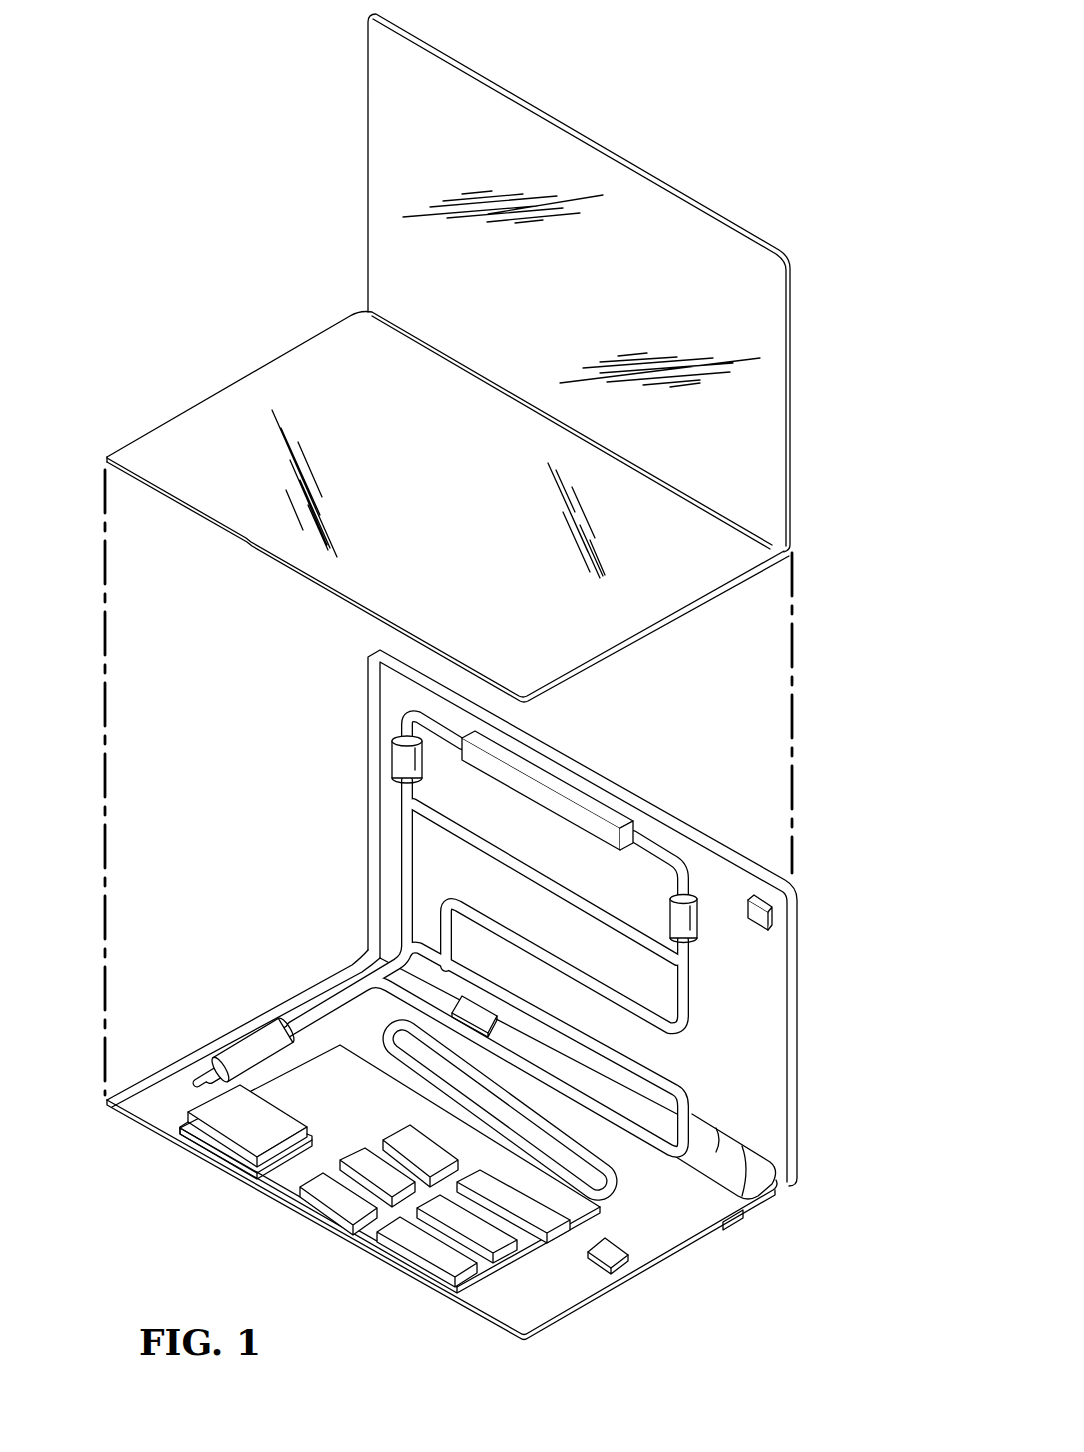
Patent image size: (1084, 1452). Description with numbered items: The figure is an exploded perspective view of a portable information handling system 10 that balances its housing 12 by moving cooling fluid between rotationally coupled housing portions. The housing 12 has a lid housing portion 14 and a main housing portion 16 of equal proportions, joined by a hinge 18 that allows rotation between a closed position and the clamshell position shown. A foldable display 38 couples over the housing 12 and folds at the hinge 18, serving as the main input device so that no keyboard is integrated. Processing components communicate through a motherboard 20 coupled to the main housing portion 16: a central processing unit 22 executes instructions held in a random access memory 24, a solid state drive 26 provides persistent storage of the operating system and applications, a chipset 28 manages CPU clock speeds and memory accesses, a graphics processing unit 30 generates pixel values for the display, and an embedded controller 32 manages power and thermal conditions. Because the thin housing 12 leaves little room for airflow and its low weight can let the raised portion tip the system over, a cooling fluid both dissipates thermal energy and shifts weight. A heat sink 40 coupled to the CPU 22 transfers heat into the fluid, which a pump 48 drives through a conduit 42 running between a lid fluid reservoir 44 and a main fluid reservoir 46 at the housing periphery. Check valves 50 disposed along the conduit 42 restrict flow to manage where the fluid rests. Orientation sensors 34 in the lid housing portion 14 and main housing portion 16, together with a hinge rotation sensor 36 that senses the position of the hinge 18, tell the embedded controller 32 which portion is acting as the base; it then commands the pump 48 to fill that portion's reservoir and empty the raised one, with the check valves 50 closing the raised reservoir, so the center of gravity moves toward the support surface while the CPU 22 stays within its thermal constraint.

The portable information handling system 10 is at (236, 193).
The housing 12 is at (456, 1311).
The lid housing portion 14 is at (368, 858).
The main housing portion 16 is at (758, 1206).
The hinge 18 is at (712, 1145).
The motherboard 20 is at (285, 1168).
The central processing unit (CPU) 22 is at (403, 1142).
The random access memory (RAM) 24 is at (398, 1185).
The solid state drive (SSD) 26 is at (293, 1172).
The chipset 28 is at (548, 1225).
The graphics processing unit (GPU) 30 is at (495, 1240).
The embedded controller 32 is at (447, 1258).
The orientation sensor 34 is at (665, 1300).
The hinge rotation sensor 36 is at (460, 1012).
The foldable display 38 is at (420, 535).
The heat sink 40 is at (228, 1100).
The conduit 42 is at (692, 985).
The lid fluid reservoir 44 is at (605, 815).
The main fluid reservoir 46 is at (218, 1138).
The pump 48 is at (250, 1046).
The check valve 50 is at (727, 943).